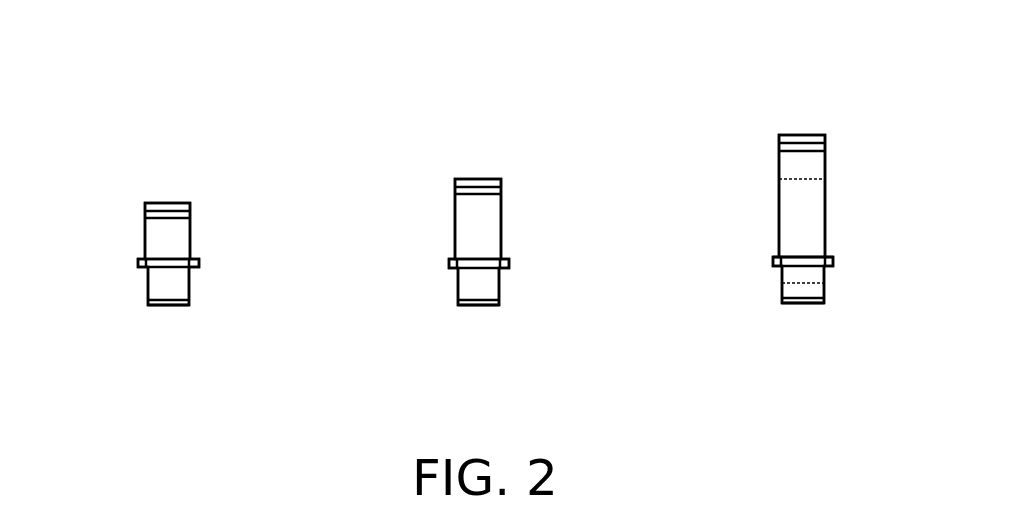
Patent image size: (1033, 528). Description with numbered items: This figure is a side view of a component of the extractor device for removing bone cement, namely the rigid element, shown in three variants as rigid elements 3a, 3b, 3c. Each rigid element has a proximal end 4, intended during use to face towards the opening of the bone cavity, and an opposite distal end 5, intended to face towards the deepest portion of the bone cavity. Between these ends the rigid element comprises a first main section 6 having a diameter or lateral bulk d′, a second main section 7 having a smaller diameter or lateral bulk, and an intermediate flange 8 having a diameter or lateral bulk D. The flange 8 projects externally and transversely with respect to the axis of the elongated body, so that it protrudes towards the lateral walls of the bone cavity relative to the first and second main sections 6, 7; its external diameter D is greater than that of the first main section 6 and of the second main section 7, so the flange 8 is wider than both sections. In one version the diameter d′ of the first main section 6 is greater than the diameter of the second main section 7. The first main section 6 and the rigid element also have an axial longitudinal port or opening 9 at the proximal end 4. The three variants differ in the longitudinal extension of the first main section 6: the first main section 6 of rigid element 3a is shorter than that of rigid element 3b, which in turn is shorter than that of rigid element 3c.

The proximal end 4 is at (127, 198).
The axial longitudinal port 9 is at (172, 178).
The first main section 6 is at (193, 233).
The flange 8 is at (200, 263).
The second main section 7 is at (190, 297).
The distal end 5 is at (120, 313).
The rigid element 3a is at (118, 269).
The rigid element 3b is at (560, 283).
The rigid element 3c is at (866, 284).
The diameter of the first main section d′ is at (803, 180).
The diameter of the flange D is at (803, 258).